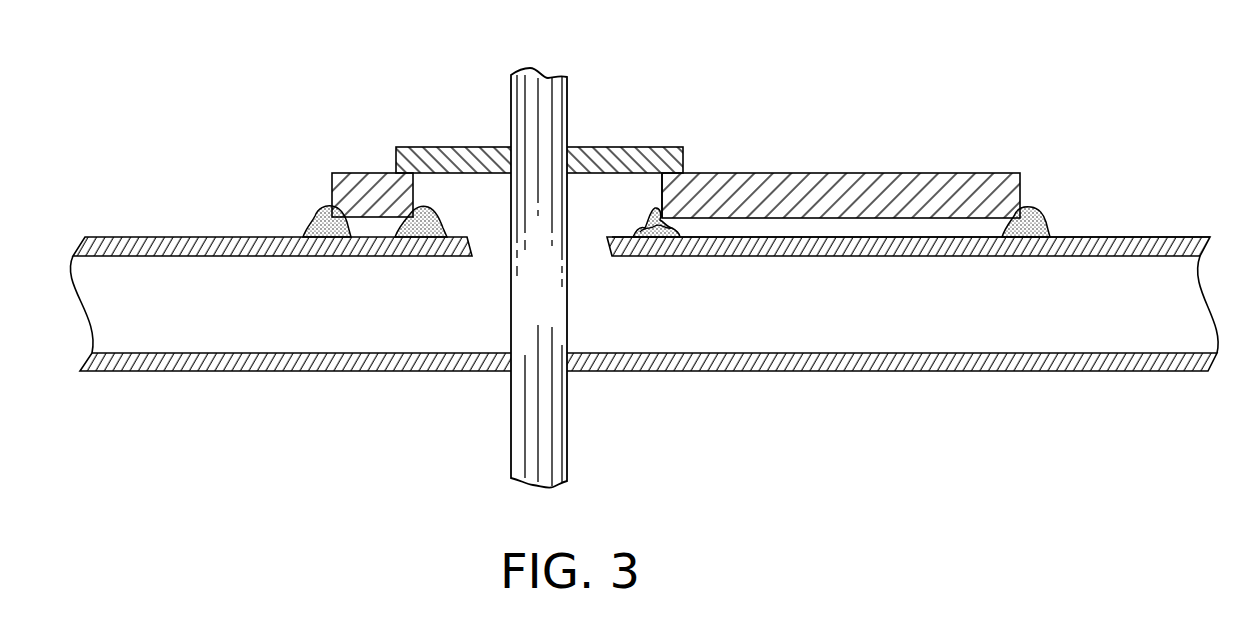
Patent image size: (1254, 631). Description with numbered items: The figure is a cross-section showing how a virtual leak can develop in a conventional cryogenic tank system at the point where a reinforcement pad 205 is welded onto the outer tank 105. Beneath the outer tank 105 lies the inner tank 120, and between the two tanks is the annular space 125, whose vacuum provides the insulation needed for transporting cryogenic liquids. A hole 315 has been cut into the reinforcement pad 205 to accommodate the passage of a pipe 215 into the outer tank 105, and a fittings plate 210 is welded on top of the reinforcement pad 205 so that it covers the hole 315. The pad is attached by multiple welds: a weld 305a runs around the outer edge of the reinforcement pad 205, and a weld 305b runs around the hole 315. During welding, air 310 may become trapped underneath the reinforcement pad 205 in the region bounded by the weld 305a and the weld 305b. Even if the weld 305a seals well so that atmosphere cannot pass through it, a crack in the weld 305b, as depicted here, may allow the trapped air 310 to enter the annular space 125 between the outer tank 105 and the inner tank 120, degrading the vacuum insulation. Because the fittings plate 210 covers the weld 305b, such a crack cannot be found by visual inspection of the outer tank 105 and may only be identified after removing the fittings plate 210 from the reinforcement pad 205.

The outer tank 105 is at (1160, 237).
The inner tank 120 is at (1103, 371).
The annular space 125 is at (877, 322).
The reinforcement pad 205 is at (852, 192).
The fittings plate 210 is at (650, 147).
The pipe 215 is at (545, 105).
The weld 305a is at (317, 218).
The weld 305b is at (430, 220).
The air 310 is at (813, 228).
The hole 315 is at (602, 210).